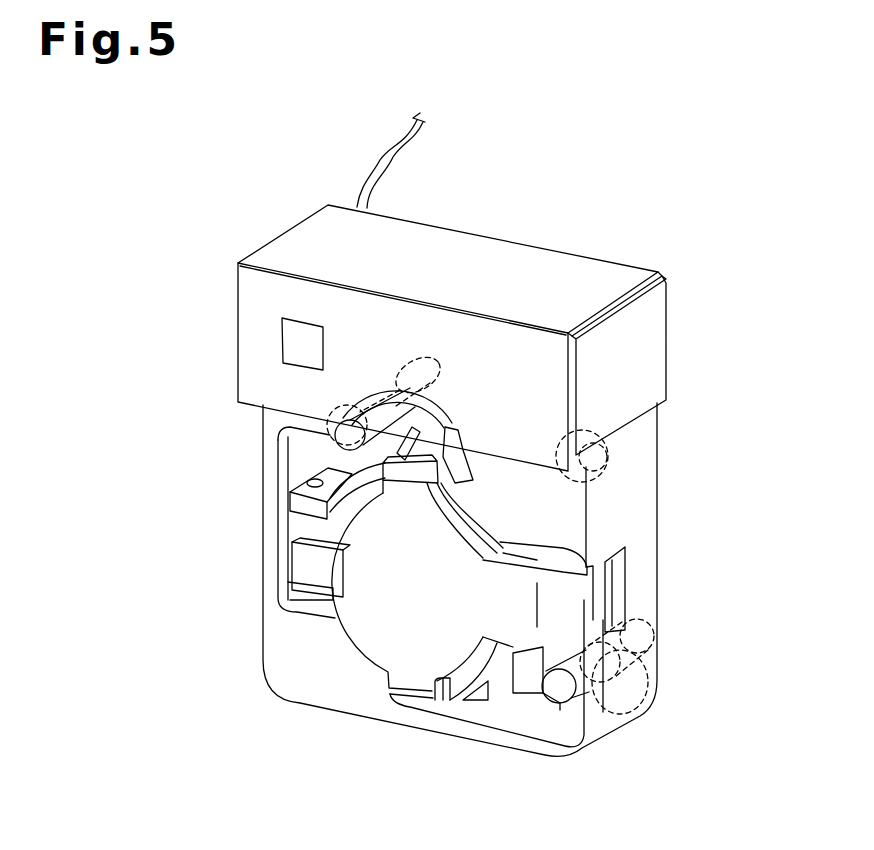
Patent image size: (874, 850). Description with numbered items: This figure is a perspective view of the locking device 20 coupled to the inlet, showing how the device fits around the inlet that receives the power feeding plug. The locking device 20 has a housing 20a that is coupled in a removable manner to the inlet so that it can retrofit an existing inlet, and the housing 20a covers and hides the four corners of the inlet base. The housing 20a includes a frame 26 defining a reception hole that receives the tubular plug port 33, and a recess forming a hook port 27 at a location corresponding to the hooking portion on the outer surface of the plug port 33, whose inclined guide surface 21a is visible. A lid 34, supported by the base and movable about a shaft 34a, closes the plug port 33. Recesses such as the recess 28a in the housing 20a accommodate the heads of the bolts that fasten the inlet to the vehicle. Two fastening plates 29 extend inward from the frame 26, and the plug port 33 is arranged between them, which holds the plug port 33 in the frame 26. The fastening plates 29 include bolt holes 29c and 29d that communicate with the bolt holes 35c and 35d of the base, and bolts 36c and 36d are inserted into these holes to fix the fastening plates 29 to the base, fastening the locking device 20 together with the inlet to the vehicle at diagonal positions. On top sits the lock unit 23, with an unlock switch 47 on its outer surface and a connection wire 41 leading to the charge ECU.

The locking device 20 is at (473, 234).
The housing 20a is at (630, 518).
The guide surface 21a is at (462, 440).
The lock unit 23 is at (273, 255).
The frame 26 is at (288, 522).
The hook port 27 is at (447, 418).
The recess 28a is at (613, 467).
The fastening plate 29 is at (327, 443).
The bolt hole 29c is at (630, 697).
The bolt hole 29d is at (373, 388).
The plug port 33 is at (450, 703).
The lid 34 is at (382, 636).
The shaft 34a is at (567, 597).
The bolt hole 35c is at (622, 655).
The bolt hole 35d is at (413, 367).
The bolt 36c is at (560, 707).
The bolt 36d is at (323, 462).
The connection wire 41 is at (407, 143).
The unlock switch 47 is at (290, 344).